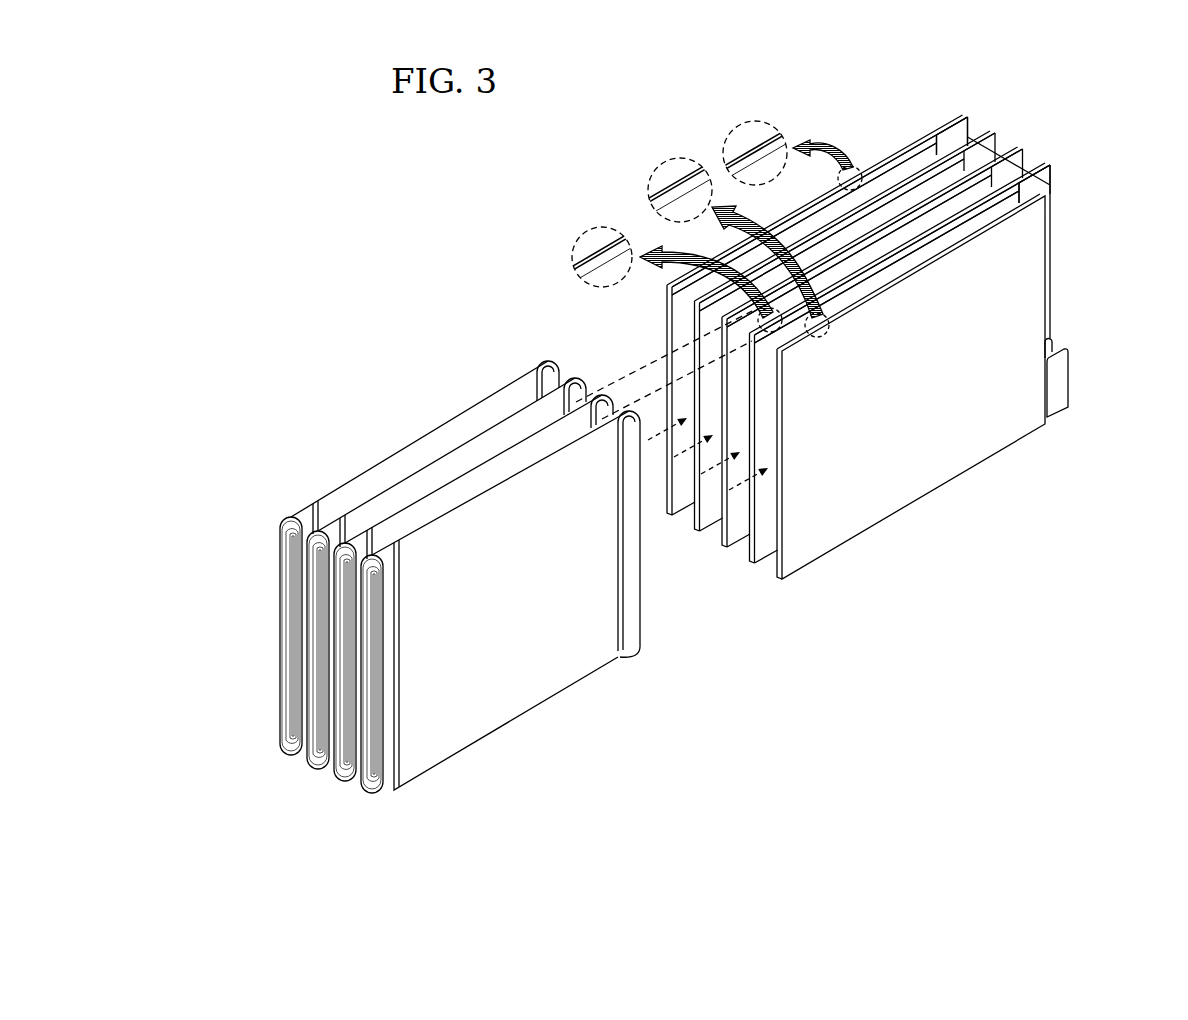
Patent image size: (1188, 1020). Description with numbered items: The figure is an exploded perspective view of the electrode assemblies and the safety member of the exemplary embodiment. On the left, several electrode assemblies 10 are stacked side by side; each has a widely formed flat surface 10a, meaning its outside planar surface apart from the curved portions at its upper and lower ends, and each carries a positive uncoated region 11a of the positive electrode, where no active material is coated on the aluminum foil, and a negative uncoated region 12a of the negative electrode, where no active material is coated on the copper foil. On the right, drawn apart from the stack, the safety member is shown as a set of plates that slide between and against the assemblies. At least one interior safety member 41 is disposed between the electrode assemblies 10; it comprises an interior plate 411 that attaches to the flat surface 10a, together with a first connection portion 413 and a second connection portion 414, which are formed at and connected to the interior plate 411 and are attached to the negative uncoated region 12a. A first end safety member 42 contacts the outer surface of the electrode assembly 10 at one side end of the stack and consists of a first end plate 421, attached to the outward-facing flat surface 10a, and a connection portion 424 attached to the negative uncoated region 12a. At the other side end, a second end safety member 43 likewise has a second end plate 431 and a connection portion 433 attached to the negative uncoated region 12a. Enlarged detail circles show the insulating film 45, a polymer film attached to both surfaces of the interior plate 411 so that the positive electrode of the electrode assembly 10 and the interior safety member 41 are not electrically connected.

The electrode assembly 10 is at (479, 559).
The flat surface 10a is at (550, 683).
The positive uncoated region 11a is at (293, 518).
The negative uncoated region 12a is at (546, 364).
The interior safety member 41 is at (860, 347).
The interior plate 411 is at (612, 253).
The first connection portion 413 is at (1046, 183).
The second connection portion 414 is at (1054, 340).
The first end safety member 42 is at (895, 345).
The first end plate 421 is at (680, 187).
The connection portion 424 is at (1062, 382).
The second end safety member 43 is at (855, 300).
The second end plate 431 is at (740, 153).
The connection portion 433 is at (962, 128).
The insulating film 45 is at (583, 253).